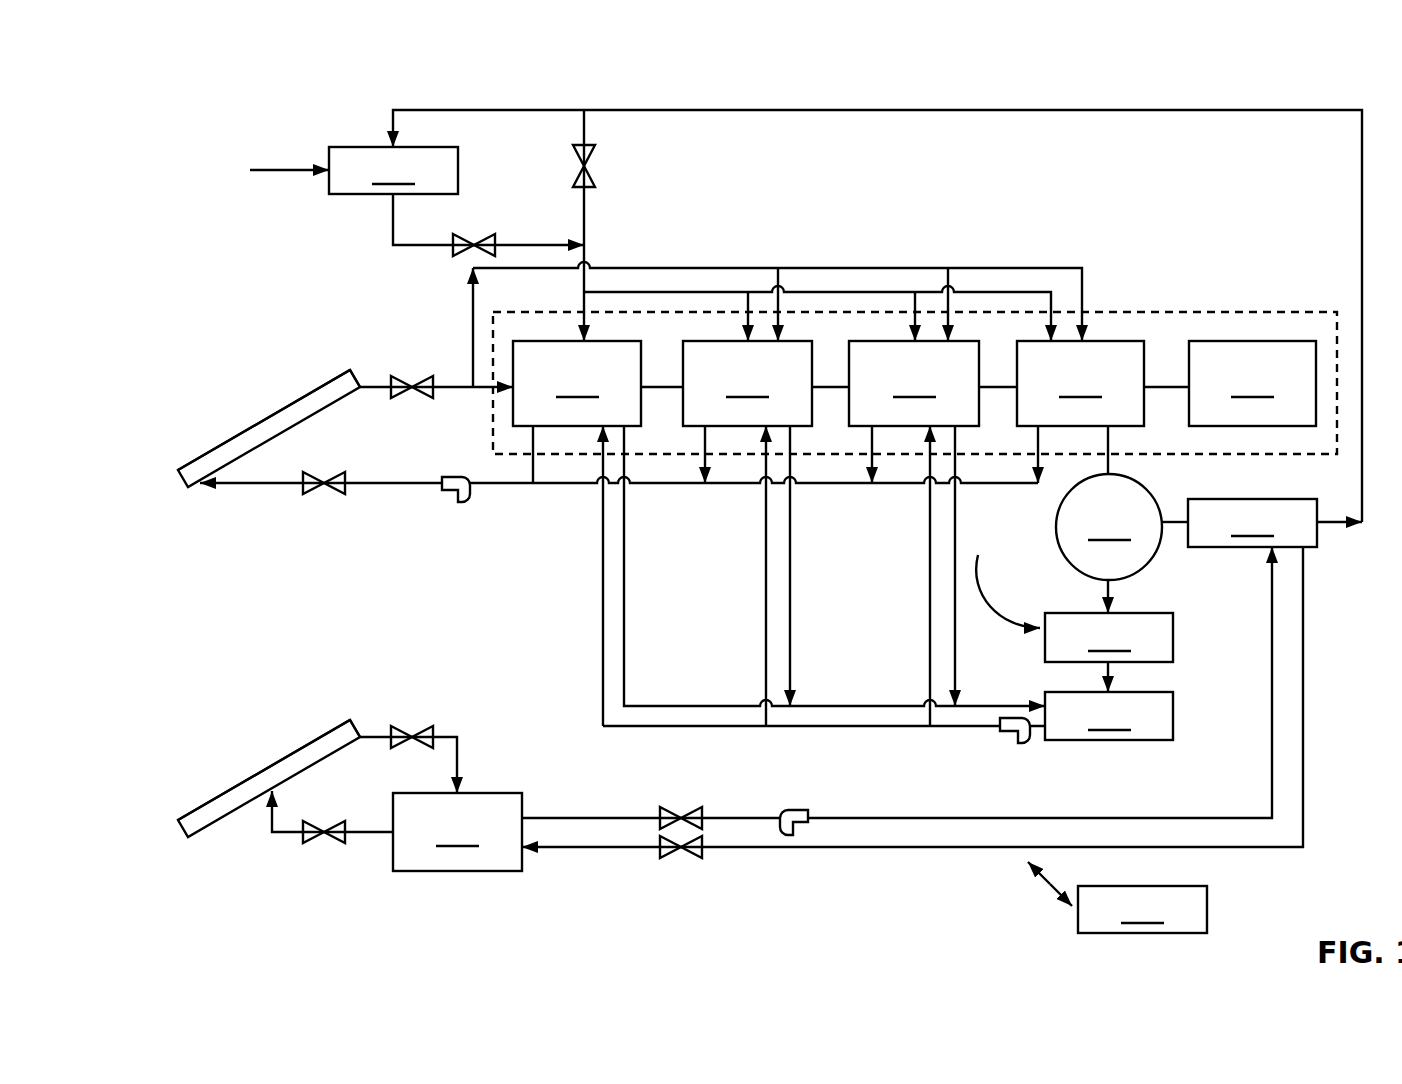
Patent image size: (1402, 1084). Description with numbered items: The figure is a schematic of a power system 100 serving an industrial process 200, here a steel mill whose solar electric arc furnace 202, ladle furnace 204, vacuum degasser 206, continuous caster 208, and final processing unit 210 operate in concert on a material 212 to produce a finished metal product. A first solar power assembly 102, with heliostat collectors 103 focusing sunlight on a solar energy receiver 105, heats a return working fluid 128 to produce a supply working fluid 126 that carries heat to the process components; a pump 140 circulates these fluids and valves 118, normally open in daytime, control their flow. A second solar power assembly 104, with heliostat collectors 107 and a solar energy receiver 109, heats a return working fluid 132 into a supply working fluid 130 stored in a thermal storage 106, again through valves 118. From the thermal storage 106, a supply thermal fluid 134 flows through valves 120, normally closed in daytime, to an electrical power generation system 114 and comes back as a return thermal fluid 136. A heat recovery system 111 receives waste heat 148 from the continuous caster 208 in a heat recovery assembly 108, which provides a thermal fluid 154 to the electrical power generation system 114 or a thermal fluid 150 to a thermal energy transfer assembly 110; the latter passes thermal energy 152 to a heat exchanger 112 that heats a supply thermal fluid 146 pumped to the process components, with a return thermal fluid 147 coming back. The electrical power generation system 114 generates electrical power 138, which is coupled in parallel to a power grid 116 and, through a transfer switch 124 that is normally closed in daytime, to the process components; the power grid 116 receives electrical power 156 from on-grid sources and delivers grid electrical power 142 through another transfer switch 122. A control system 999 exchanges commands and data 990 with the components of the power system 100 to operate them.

The power system 100 is at (1270, 74).
The first solar power assembly 102 is at (245, 423).
The heliostat collectors 103 is at (220, 450).
The second solar power assembly 104 is at (245, 775).
The solar energy receiver 105 is at (340, 393).
The thermal storage 106 is at (457, 832).
The heliostat collectors 107 is at (220, 803).
The heat recovery assembly 108 is at (1109, 527).
The solar energy receiver 109 is at (330, 742).
The thermal energy transfer assembly 110 is at (1109, 637).
The heat recovery system 111 is at (999, 577).
The heat exchanger 112 is at (1109, 716).
The electrical power generation system 114 is at (1275, 523).
The power grid 116 is at (393, 170).
The valves 118 is at (400, 377).
The valves 120 is at (683, 818).
The transfer switch 122 is at (478, 243).
The transfer switch 124 is at (580, 168).
The supply working fluid 126 is at (846, 268).
The return working fluid 128 is at (254, 486).
The supply working fluid 130 is at (470, 762).
The return working fluid 132 is at (268, 835).
The supply thermal fluid 134 is at (925, 818).
The return thermal fluid 136 is at (922, 848).
The electrical power 138 is at (815, 110).
The pump 140 is at (458, 505).
The grid electrical power 142 is at (398, 248).
The supply thermal fluid 146 is at (855, 726).
The return thermal fluid 147 is at (672, 726).
The waste heat 148 is at (1110, 460).
The thermal fluid 150 is at (1105, 592).
The thermal energy 152 is at (1105, 677).
The thermal fluid 154 is at (1175, 523).
The electrical power 156 is at (290, 171).
The industrial process 200 is at (1228, 306).
The solar electric arc furnace 202 is at (577, 383).
The ladle furnace 204 is at (747, 383).
The vacuum degasser 206 is at (914, 383).
The continuous caster 208 is at (1080, 383).
The final processing unit 210 is at (1252, 383).
The material 212 is at (655, 383).
The commands/data 990 is at (1050, 888).
The control system 999 is at (1142, 909).